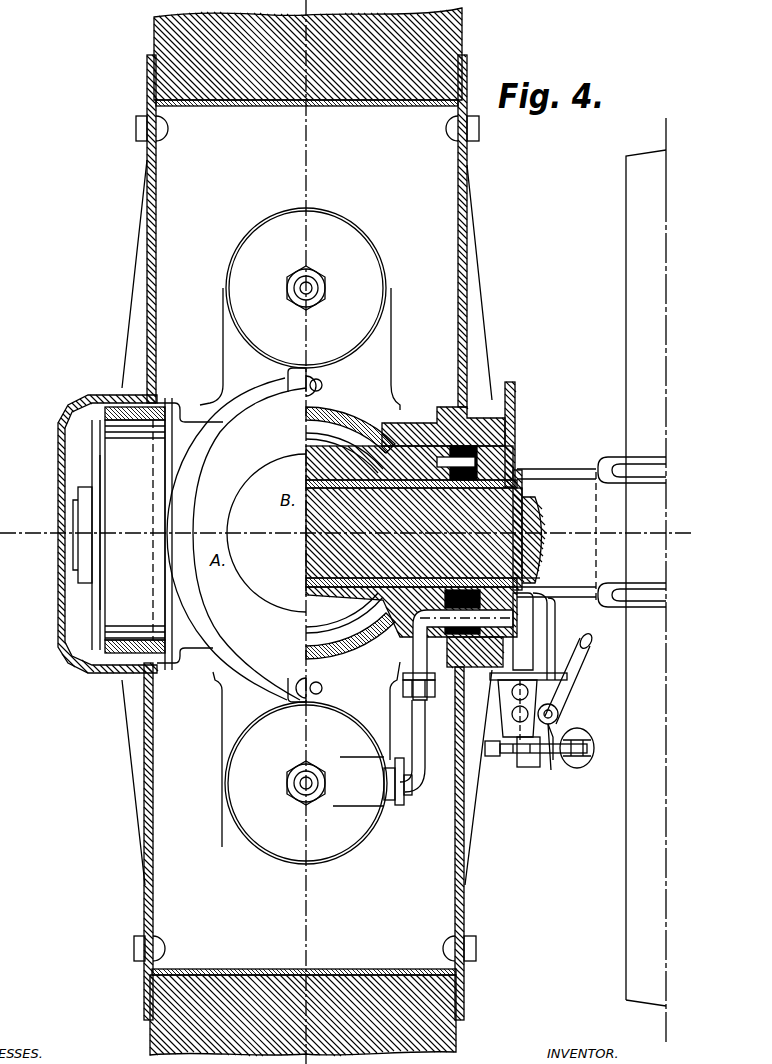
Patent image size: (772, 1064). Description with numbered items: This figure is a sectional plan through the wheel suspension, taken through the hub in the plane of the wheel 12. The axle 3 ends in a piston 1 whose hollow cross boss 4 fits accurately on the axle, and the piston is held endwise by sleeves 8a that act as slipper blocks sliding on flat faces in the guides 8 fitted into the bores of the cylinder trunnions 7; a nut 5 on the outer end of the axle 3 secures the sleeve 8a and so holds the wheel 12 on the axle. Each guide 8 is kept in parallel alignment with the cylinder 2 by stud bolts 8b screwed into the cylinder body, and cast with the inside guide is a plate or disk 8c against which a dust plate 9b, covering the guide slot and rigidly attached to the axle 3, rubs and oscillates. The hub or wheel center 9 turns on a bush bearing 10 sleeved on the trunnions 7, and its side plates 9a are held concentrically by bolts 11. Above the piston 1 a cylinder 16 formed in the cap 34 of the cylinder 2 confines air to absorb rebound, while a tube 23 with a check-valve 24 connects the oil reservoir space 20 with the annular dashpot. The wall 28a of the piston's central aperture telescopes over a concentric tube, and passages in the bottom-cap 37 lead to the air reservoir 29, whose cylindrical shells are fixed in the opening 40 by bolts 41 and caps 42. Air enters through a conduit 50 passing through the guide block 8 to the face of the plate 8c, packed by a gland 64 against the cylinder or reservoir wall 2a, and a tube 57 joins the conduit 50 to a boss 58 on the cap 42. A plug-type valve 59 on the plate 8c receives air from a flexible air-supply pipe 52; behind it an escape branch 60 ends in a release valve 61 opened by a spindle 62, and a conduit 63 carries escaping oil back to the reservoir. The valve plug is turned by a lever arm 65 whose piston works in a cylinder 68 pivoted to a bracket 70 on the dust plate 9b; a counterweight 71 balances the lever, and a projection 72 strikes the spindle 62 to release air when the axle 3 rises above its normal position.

The piston 1 is at (344, 431).
The cylinder 2 is at (336, 420).
The cylinder or reservoir wall 2a is at (405, 425).
The axle 3 is at (50, 512).
The hollow cross boss 4 is at (358, 483).
The nut 5 is at (82, 580).
The cylinder trunnions 7 is at (513, 433).
The guides 8 is at (516, 446).
The sleeves 8a is at (523, 496).
The stud bolts 8b is at (514, 456).
The plate or disk 8c is at (517, 389).
The hub or wheel center 9 is at (263, 106).
The side plates 9a is at (146, 178).
The dust plate 9b is at (562, 467).
The bush bearing 10 is at (450, 412).
The bolts 11 is at (160, 128).
The wheel 12 is at (153, 42).
The cylinder 16 is at (270, 602).
The space 20 is at (267, 539).
The tube 23 is at (323, 383).
The check-valve 24 is at (322, 700).
The wall of aperture 28a is at (322, 483).
The air reservoir 29 is at (306, 536).
The cap 34 is at (249, 544).
The bottom-cap 37 is at (395, 410).
The opening 40 is at (391, 351).
The bolts 41 is at (318, 291).
The caps 42 is at (366, 251).
The air duct or conduit 50 is at (531, 641).
The flexible air-supply pipe 52 is at (562, 698).
The tube or conduit 57 is at (425, 740).
The boss 58 is at (400, 805).
The valve 59 is at (505, 715).
The vent or escape branch 60 is at (545, 710).
The air release valve 61 is at (560, 712).
The spindle 62 is at (552, 762).
The conduit 63 is at (550, 619).
The gland 64 is at (530, 578).
The lever arm 65 is at (543, 758).
The cylinder 68 is at (595, 750).
The bracket 70 is at (598, 703).
The counterweight 71 is at (494, 759).
The projection 72 is at (560, 736).